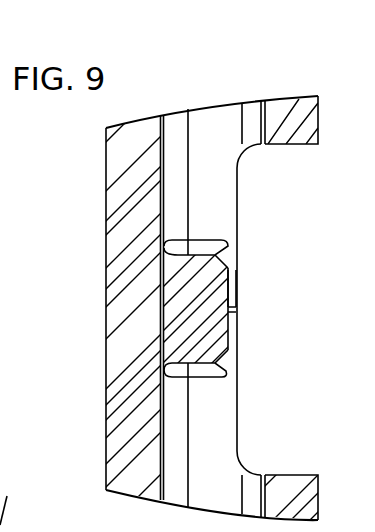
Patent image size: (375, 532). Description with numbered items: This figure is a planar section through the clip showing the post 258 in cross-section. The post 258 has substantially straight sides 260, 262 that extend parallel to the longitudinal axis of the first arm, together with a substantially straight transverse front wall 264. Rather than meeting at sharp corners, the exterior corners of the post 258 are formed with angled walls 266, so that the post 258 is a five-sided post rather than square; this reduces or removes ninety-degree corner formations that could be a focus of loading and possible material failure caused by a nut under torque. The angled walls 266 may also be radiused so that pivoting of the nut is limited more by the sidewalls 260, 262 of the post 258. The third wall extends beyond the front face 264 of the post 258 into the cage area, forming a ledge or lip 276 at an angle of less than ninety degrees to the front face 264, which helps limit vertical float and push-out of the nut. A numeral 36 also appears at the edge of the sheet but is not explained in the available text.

The straight side 260 is at (208, 247).
The angled wall 266 is at (226, 247).
The post 258 is at (207, 273).
The lip 276 is at (237, 287).
The front wall 264 is at (237, 320).
The straight side 262 is at (199, 364).
The rim 36 is at (13, 498).